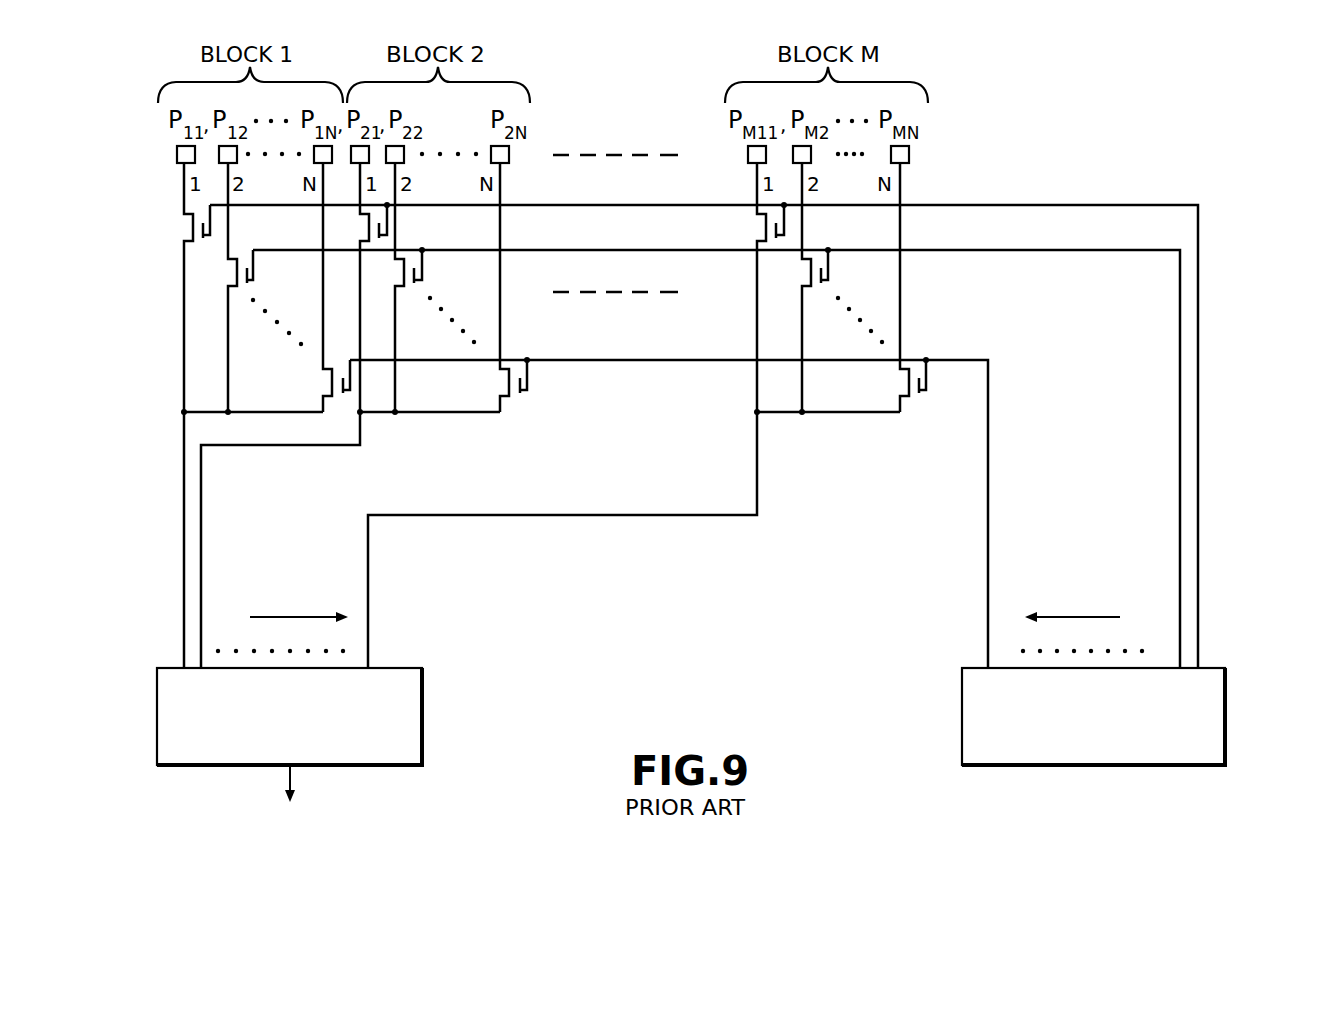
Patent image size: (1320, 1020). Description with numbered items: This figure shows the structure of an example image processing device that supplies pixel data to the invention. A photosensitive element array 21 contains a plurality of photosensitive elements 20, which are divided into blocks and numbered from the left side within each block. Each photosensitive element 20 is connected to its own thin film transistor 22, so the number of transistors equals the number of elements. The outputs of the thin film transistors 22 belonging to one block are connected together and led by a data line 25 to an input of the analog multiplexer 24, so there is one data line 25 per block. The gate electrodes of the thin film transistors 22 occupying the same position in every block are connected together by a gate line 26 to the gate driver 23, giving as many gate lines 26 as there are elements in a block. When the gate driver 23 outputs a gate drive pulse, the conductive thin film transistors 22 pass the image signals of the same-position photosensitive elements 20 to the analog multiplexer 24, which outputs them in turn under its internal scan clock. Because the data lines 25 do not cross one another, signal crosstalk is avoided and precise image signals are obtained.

The photosensitive element 20 is at (177, 154).
The photosensitive element array 21 is at (942, 147).
The thin film transistor 22 is at (540, 307).
The gate driver 23 is at (1225, 713).
The analog multiplexer 24 is at (422, 713).
The data line 25 is at (434, 540).
The gate line 26 is at (731, 436).